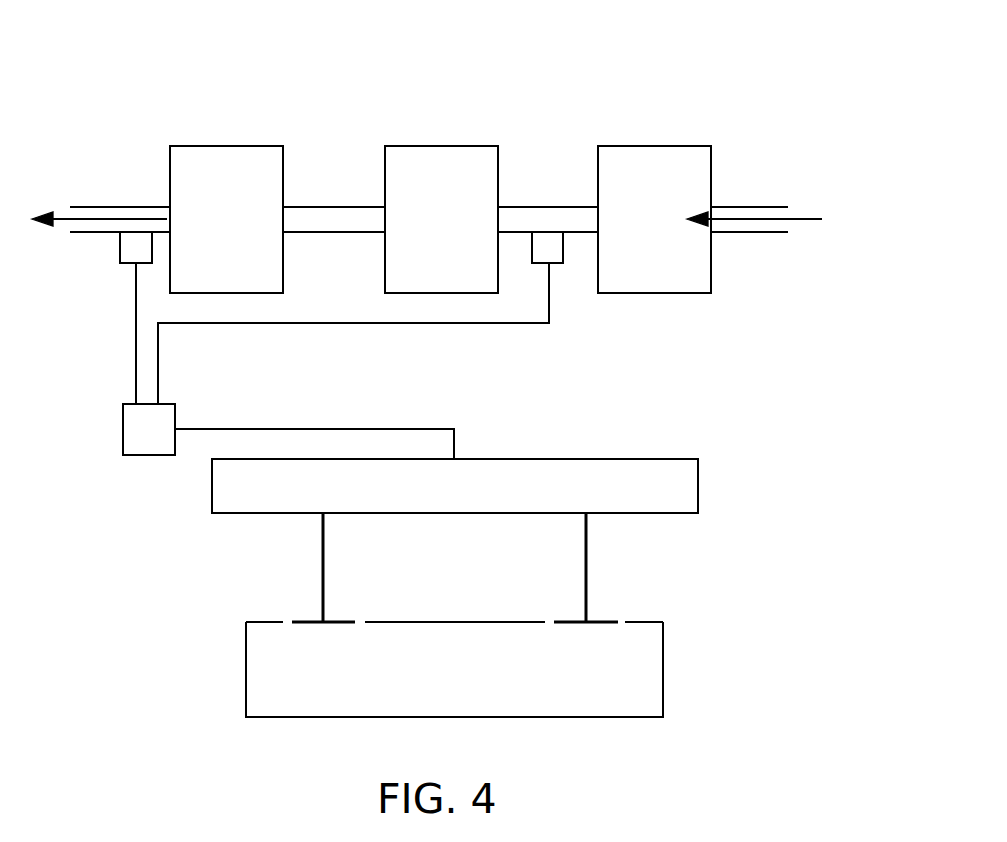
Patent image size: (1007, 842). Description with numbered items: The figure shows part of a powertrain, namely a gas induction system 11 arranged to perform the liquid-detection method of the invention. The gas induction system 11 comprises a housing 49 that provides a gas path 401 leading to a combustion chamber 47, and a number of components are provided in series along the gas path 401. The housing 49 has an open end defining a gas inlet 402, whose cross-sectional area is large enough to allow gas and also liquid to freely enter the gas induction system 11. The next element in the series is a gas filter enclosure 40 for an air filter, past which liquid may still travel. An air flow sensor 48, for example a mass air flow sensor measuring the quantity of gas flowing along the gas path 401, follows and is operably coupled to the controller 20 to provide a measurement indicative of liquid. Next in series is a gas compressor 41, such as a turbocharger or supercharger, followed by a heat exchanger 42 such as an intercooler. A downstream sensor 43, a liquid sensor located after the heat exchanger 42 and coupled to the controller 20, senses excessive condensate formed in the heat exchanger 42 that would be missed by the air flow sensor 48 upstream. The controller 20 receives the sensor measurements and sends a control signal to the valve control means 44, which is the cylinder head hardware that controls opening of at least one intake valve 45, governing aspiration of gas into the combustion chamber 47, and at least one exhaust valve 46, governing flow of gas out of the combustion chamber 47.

The gas induction system 11 is at (746, 68).
The gas filter enclosure 40 is at (654, 156).
The gas compressor 41 is at (441, 156).
The heat exchanger 42 is at (229, 156).
The downstream sensor 43 is at (120, 245).
The valve control means 44 is at (527, 459).
The intake valve 45 is at (325, 569).
The exhaust valve 46 is at (588, 569).
The combustion chamber 47 is at (663, 668).
The air flow sensor 48 is at (556, 266).
The housing 49 is at (543, 207).
The controller 20 is at (123, 428).
The gas path 401 is at (800, 219).
The gas inlet 402 is at (802, 229).